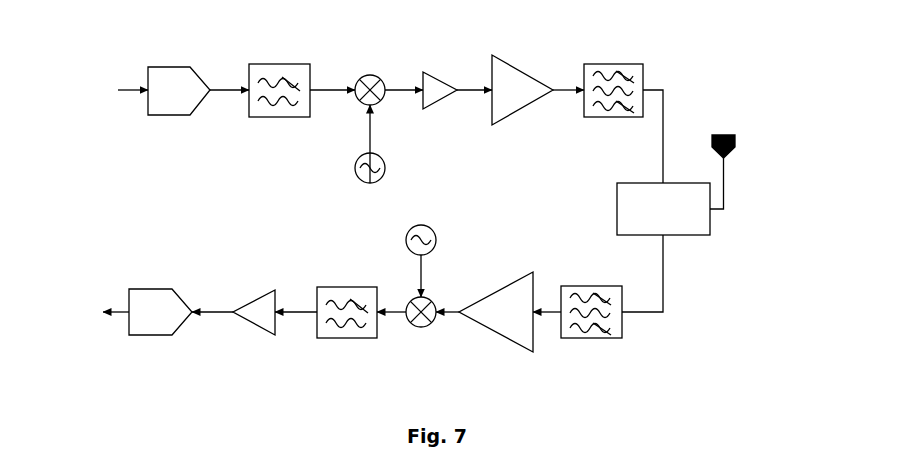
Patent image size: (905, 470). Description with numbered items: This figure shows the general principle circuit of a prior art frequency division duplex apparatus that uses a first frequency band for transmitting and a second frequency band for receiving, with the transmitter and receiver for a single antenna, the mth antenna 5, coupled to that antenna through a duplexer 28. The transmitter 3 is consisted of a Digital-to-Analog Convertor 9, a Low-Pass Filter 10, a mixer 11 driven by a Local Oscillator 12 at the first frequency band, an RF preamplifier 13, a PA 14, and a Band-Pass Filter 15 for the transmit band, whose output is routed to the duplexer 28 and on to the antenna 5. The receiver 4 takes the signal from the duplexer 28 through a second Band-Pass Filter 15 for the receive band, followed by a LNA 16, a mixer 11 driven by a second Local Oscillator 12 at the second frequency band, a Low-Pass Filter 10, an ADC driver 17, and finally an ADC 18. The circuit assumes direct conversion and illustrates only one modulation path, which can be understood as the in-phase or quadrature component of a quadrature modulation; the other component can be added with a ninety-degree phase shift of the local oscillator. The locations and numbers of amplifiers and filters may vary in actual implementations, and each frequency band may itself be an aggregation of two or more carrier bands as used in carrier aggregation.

The transmitter m 3 is at (158, 71).
The receiver m 4 is at (151, 337).
The antenna m 5 is at (739, 160).
The Digital-to-Analog Convertor 9 is at (179, 91).
The Low-Pass Filter 10 is at (313, 205).
The mixer 11 is at (397, 201).
The Local Oscillator 12 is at (397, 201).
The RF preamplifier 13 is at (447, 60).
The PA 14 is at (522, 90).
The Band-Pass Filter 15 is at (602, 205).
The LNA 16 is at (496, 312).
The ADC driver 17 is at (250, 345).
The ADC 18 is at (160, 312).
The duplexer 28 is at (663, 209).